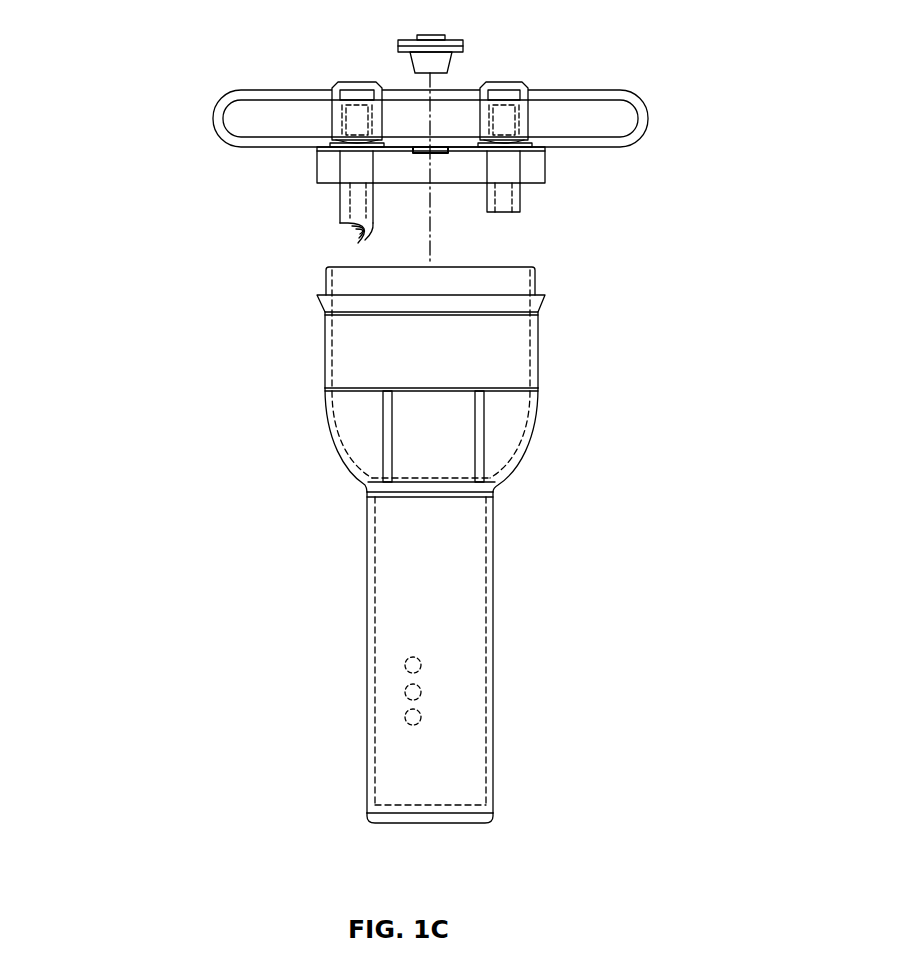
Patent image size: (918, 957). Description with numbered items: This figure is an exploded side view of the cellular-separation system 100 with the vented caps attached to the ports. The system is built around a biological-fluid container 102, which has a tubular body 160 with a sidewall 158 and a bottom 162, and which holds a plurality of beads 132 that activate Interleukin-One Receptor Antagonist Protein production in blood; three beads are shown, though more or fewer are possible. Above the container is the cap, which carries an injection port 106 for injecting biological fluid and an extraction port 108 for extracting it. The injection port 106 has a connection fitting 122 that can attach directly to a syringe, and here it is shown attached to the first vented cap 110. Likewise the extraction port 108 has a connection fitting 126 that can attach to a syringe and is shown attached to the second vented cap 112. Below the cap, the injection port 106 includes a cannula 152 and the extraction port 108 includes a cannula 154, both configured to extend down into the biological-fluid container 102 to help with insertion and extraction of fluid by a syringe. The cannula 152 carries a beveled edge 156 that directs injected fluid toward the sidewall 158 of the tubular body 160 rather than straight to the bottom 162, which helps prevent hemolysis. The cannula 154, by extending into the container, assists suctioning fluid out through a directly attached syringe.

The cellular-separation system 100 is at (186, 70).
The biological-fluid container 102 is at (460, 549).
The injection port 106 is at (291, 166).
The extraction port 108 is at (540, 209).
The first vented cap 110 is at (363, 80).
The second vented cap 112 is at (528, 92).
The connection fitting 122 is at (358, 118).
The connection fitting 126 is at (508, 120).
The beads 132 is at (424, 687).
The cannula 152 is at (340, 190).
The cannula 154 is at (523, 193).
The beveled edge 156 is at (350, 235).
The sidewall 158 is at (323, 409).
The tubular body 160 is at (351, 529).
The bottom 162 is at (437, 815).